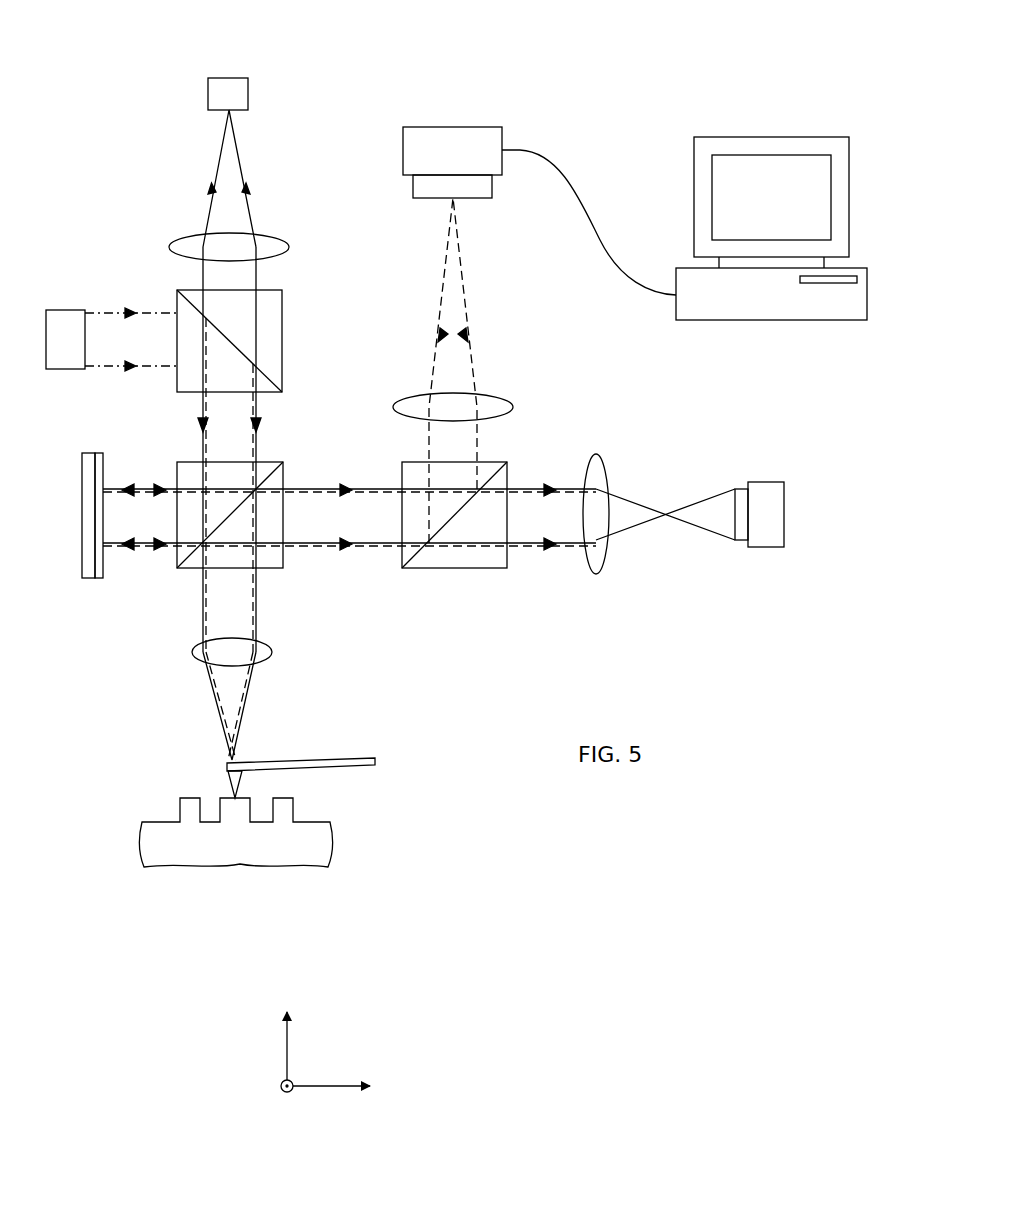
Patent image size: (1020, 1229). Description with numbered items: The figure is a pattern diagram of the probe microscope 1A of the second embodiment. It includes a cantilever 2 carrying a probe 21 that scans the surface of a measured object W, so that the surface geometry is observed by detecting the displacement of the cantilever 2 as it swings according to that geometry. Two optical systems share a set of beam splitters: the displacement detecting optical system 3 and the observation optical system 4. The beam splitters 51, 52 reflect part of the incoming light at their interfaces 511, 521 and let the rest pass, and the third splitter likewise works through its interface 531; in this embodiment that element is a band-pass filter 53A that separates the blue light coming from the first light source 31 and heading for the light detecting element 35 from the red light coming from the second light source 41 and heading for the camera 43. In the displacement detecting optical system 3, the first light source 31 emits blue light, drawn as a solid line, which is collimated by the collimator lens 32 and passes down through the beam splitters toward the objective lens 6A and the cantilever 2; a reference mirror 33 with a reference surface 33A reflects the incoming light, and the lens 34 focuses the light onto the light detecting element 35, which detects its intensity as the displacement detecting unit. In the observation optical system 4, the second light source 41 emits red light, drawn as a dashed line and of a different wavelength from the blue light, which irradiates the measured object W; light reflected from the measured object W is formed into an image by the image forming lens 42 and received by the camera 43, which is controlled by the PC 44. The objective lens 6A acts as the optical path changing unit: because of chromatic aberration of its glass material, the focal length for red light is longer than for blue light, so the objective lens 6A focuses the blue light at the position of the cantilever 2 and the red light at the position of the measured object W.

The probe microscope 1A is at (622, 88).
The cantilever 2 is at (249, 738).
The probe 21 is at (228, 781).
The displacement detecting optical system 3 is at (438, 337).
The first light source 31 is at (230, 78).
The collimator lens 32 is at (266, 242).
The reference mirror 33 is at (99, 516).
The reference surface 33A is at (98, 452).
The lens 34 is at (596, 575).
The light detecting element 35 is at (768, 548).
The observation optical system 4 is at (451, 307).
The second light source 41 is at (64, 310).
The image forming lens 42 is at (513, 407).
The camera 43 is at (456, 127).
The PC (Personal Computer) 44 is at (770, 320).
The beam splitter 51 is at (266, 340).
The interface 511 is at (264, 374).
The beam splitter 52 is at (201, 546).
The interface 521 is at (184, 560).
The band-pass filter 53A is at (459, 549).
The interface 531 is at (422, 550).
The objective lens 6A is at (272, 654).
The measured object W is at (330, 843).